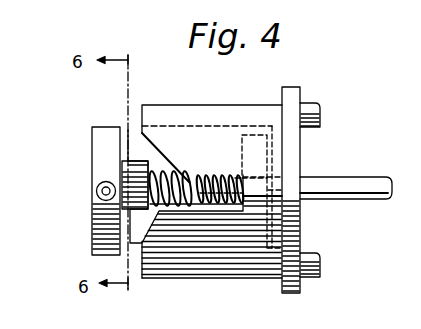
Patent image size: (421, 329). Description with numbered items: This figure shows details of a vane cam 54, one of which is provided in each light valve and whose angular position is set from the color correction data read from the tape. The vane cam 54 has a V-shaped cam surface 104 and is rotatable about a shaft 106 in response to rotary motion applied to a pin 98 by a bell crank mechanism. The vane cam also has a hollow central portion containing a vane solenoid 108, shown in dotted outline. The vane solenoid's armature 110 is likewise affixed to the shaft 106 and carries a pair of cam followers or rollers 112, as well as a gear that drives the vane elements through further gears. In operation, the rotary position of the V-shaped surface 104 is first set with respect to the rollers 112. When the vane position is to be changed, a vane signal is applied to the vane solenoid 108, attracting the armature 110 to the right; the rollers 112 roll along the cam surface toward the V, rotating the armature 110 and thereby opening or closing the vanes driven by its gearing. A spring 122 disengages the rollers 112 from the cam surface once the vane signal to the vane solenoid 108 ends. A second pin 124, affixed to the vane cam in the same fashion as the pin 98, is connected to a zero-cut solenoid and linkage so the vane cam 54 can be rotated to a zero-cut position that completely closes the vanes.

The vane cam 54 is at (160, 103).
The pin 98 is at (311, 103).
The V-shaped cam surface 104 is at (158, 217).
The shaft 106 is at (344, 184).
The vane solenoid 108 is at (252, 135).
The armature 110 is at (100, 148).
The cam followers or rollers 112 is at (97, 191).
The spring 122 is at (155, 200).
The pin 124 is at (320, 277).